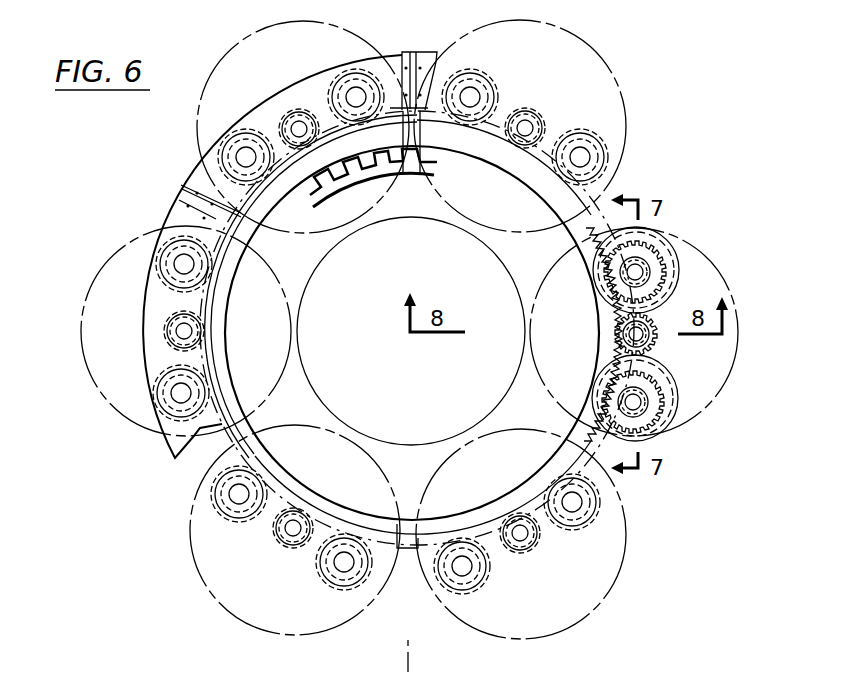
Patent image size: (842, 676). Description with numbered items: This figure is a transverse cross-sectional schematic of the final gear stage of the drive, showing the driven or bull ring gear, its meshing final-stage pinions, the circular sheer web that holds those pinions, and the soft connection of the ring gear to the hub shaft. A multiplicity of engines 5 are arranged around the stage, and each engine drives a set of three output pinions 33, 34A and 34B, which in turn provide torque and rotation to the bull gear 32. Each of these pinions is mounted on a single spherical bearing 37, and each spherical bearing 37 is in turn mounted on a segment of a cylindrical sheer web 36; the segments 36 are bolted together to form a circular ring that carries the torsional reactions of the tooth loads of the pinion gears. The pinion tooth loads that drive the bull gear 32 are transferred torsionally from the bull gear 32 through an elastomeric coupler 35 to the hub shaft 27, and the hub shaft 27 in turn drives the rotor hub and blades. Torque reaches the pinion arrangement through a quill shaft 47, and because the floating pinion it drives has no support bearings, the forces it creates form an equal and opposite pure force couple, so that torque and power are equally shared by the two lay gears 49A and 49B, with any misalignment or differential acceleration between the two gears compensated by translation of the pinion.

The engines 5 is at (92, 386).
The hub shaft 27 is at (402, 175).
The bull gear 32 is at (187, 462).
The output pinion 33 is at (654, 334).
The output pinion 34A is at (676, 402).
The output pinion 34B is at (677, 276).
The elastomeric coupler 35 is at (430, 153).
The cylindrical sheer web segment 36 is at (163, 330).
The spherical bearing 37 is at (176, 224).
The quill shaft 47 is at (654, 326).
The lay gear 49A is at (668, 430).
The lay gear 49B is at (671, 250).